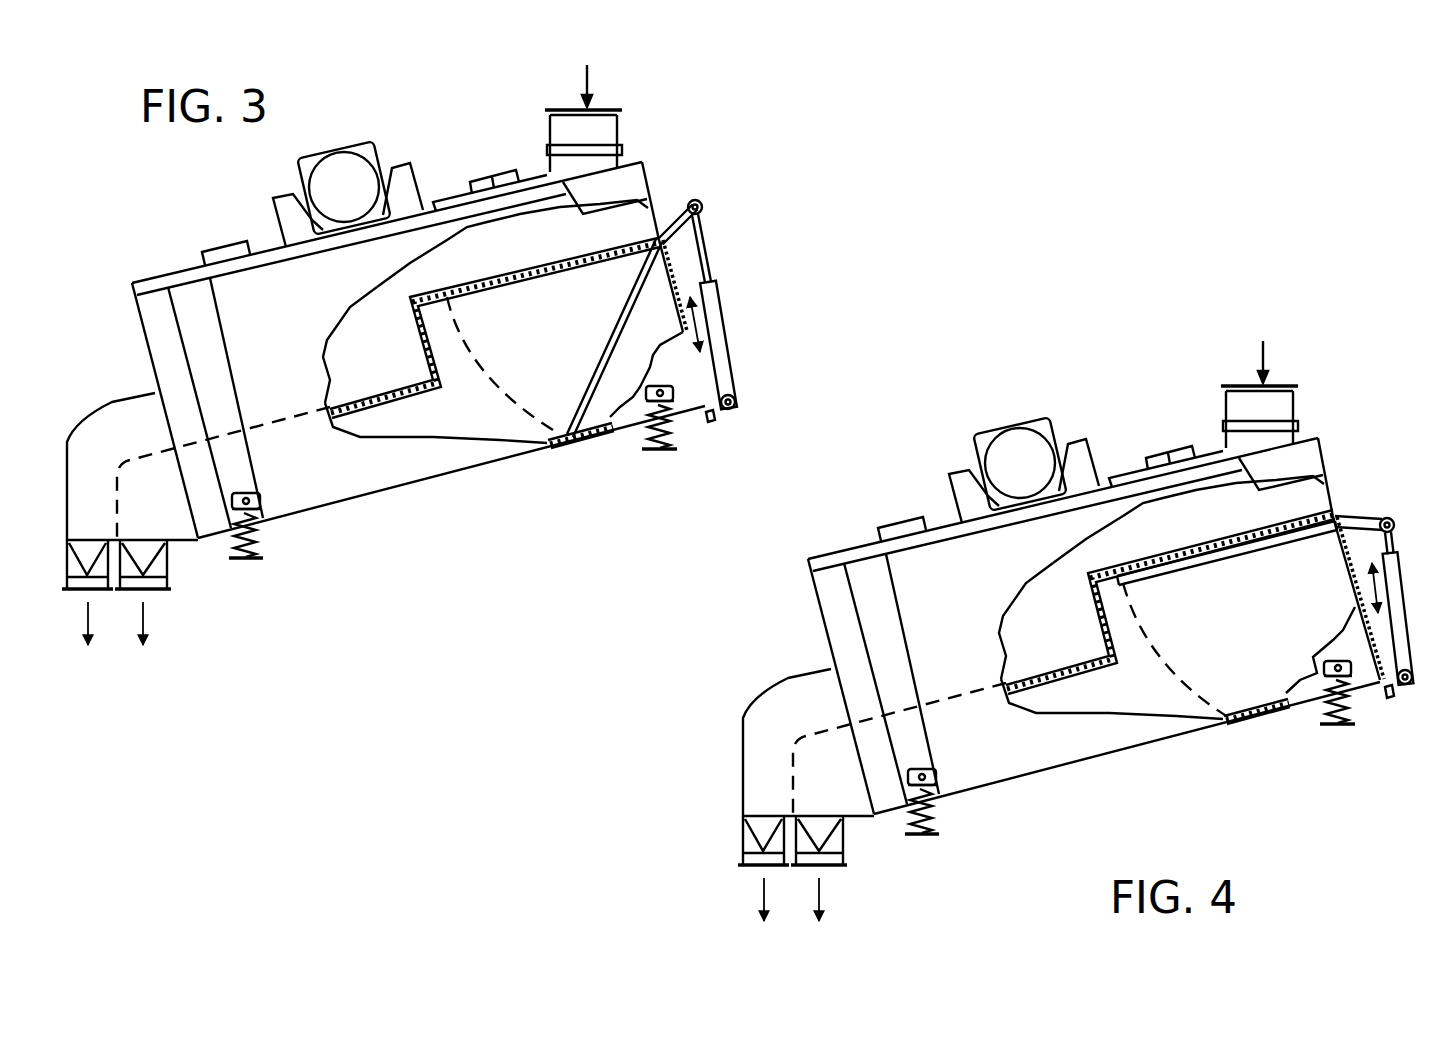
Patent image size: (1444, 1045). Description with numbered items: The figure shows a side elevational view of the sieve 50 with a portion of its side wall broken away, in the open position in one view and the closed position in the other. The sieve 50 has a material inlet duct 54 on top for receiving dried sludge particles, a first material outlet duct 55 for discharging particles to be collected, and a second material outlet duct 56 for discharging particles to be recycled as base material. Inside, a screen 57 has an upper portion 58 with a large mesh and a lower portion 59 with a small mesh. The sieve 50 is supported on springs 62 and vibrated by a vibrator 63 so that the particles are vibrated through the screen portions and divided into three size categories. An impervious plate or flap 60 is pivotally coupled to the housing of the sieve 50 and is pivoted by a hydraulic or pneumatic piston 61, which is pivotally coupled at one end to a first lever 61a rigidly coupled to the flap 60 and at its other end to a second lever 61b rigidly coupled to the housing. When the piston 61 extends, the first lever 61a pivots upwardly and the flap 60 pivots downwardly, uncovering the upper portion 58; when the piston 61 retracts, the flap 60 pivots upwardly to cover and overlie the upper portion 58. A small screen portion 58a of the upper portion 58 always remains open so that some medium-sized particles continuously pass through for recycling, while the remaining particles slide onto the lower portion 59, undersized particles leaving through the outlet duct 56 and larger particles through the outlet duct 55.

In FIG. 3, the sieve 50 is at (183, 225).
In FIG. 4, the sieve 50 is at (1063, 605).
In FIG. 3, the material inlet duct 54 is at (622, 110).
In FIG. 4, the material inlet duct 54 is at (1282, 383).
In FIG. 3, the first material outlet duct 55 is at (62, 578).
In FIG. 4, the first material outlet duct 55 is at (722, 868).
In FIG. 3, the second material outlet duct 56 is at (170, 580).
In FIG. 4, the second material outlet duct 56 is at (854, 868).
In FIG. 3, the screen 57 is at (373, 343).
In FIG. 4, the screen 57 is at (995, 621).
In FIG. 3, the upper portion 58 is at (518, 270).
In FIG. 4, the upper portion 58 is at (1170, 607).
In FIG. 3, the small screen portion 58a is at (393, 281).
In FIG. 4, the small screen portion 58a is at (1158, 519).
In FIG. 3, the lower portion 59 is at (327, 395).
In FIG. 4, the lower portion 59 is at (1008, 729).
In FIG. 3, the flap 60 is at (593, 372).
In FIG. 4, the flap 60 is at (1227, 619).
In FIG. 3, the piston 61 is at (722, 313).
In FIG. 4, the piston 61 is at (1408, 596).
In FIG. 3, the first lever 61a is at (666, 203).
In FIG. 4, the first lever 61a is at (1368, 481).
In FIG. 3, the second lever 61b is at (725, 422).
In FIG. 4, the second lever 61b is at (1388, 728).
In FIG. 3, the springs 62 is at (260, 553).
In FIG. 4, the springs 62 is at (1130, 748).
In FIG. 3, the vibrator 63 is at (365, 172).
In FIG. 4, the vibrator 63 is at (1024, 438).